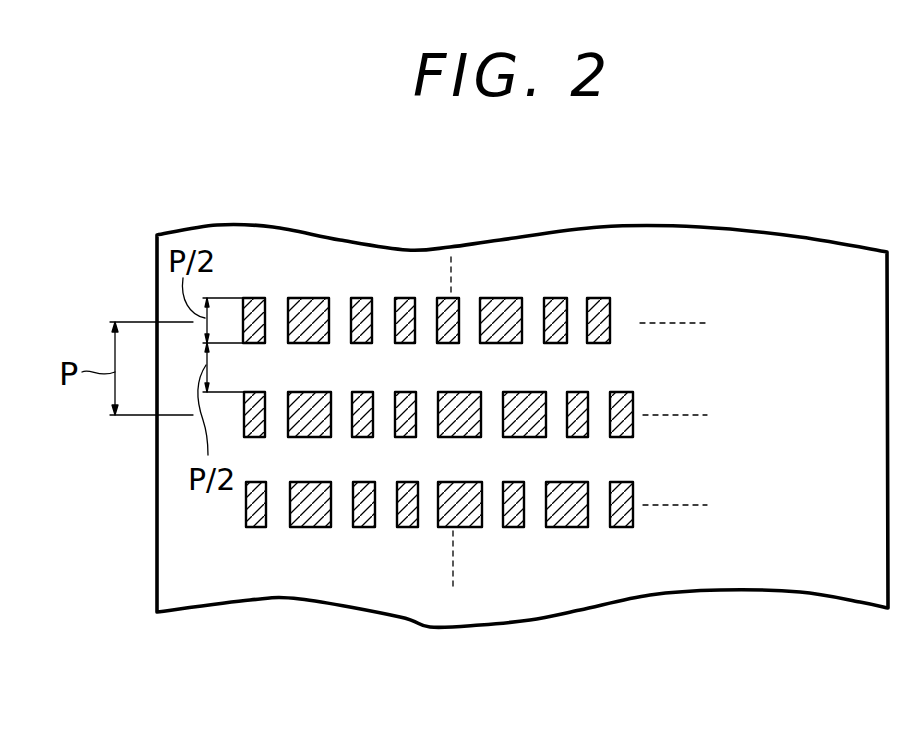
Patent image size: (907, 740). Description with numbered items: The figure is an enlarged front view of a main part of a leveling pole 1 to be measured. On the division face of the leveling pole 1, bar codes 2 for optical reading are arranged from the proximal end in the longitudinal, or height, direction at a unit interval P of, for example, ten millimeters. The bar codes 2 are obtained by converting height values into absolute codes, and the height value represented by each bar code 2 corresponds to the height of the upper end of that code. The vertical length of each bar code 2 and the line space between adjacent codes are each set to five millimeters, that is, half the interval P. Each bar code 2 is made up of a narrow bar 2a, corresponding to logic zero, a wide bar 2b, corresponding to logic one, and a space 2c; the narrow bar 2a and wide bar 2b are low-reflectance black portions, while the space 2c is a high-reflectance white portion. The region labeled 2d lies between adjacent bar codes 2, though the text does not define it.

The leveling pole 1 is at (807, 580).
The bar code 2 is at (620, 288).
The narrow bar 2a is at (403, 298).
The wide bar 2b is at (502, 298).
The space 2c is at (427, 305).
The gap between rows of holes 2d is at (635, 364).